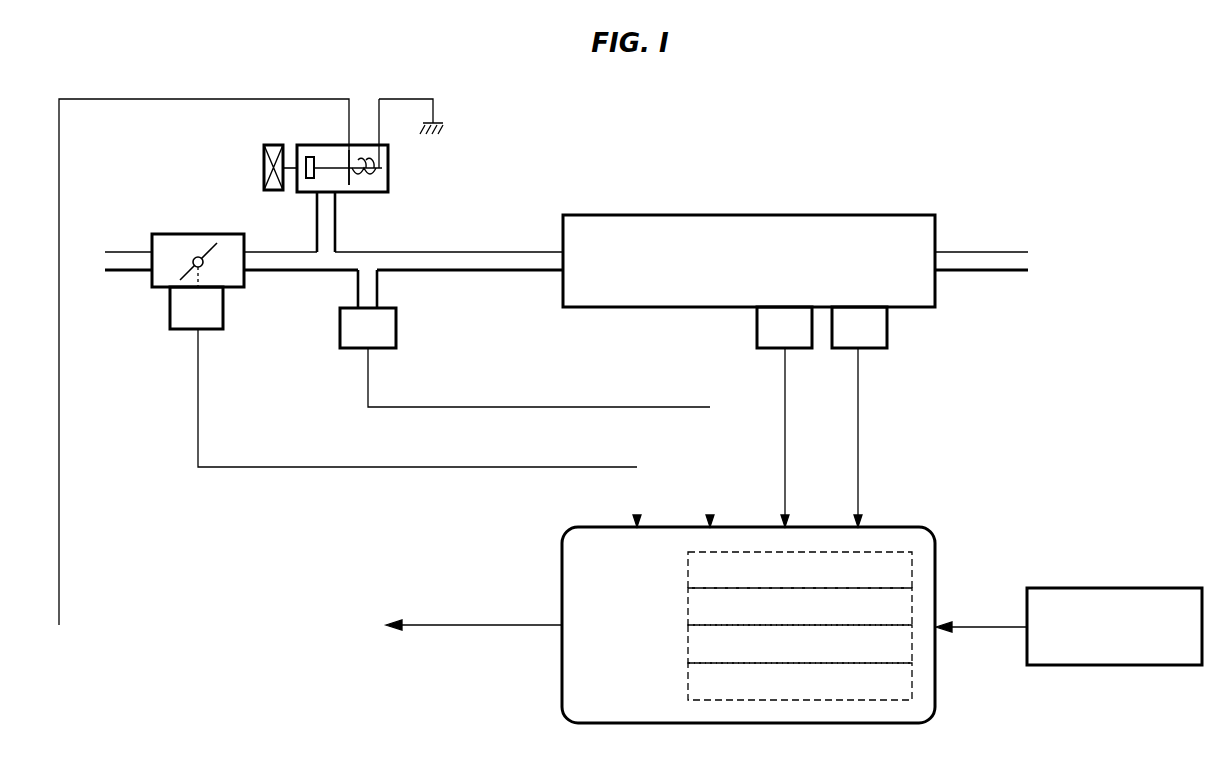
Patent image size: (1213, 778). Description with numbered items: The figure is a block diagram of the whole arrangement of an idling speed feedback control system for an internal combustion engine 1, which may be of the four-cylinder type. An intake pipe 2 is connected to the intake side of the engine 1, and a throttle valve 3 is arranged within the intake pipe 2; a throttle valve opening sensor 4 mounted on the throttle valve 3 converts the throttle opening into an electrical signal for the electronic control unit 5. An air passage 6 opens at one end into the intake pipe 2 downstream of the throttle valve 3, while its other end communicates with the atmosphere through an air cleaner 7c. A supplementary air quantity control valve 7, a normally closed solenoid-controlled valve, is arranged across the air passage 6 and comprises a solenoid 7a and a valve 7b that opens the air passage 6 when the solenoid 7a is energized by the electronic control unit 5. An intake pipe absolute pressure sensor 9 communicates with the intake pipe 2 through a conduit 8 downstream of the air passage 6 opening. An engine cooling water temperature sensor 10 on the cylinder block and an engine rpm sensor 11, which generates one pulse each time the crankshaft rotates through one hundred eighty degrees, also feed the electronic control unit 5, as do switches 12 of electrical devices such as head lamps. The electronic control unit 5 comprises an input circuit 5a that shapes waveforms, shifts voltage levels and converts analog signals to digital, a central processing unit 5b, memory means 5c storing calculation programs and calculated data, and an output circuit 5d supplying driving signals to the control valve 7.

The internal combustion engine 1 is at (890, 214).
The intake pipe 2 is at (490, 251).
The throttle valve 3 is at (203, 258).
The throttle valve opening sensor 4 is at (225, 314).
The electronic control unit 5 is at (690, 600).
The input circuit 5a is at (912, 568).
The central processing unit 5b is at (912, 606).
The memory means 5c is at (912, 643).
The output circuit 5d is at (912, 681).
The air passage 6 is at (337, 236).
The supplementary air quantity control valve 7 is at (251, 362).
The solenoid 7a is at (388, 176).
The valve 7b is at (309, 156).
The air cleaner 7c is at (273, 144).
The conduit 8 is at (378, 294).
The intake pipe absolute pressure sensor 9 is at (397, 331).
The engine cooling water temperature sensor 10 is at (795, 350).
The engine rpm sensor 11 is at (867, 350).
The switches of electrical devices 12 is at (1145, 587).